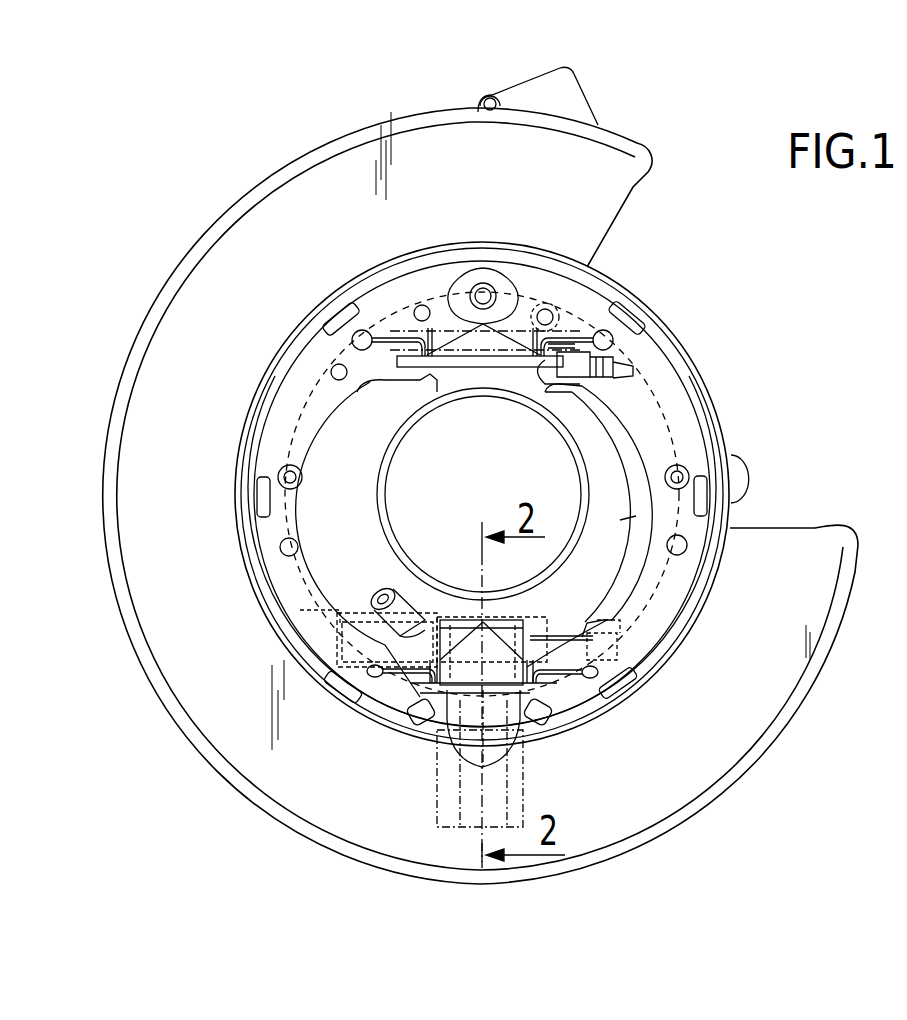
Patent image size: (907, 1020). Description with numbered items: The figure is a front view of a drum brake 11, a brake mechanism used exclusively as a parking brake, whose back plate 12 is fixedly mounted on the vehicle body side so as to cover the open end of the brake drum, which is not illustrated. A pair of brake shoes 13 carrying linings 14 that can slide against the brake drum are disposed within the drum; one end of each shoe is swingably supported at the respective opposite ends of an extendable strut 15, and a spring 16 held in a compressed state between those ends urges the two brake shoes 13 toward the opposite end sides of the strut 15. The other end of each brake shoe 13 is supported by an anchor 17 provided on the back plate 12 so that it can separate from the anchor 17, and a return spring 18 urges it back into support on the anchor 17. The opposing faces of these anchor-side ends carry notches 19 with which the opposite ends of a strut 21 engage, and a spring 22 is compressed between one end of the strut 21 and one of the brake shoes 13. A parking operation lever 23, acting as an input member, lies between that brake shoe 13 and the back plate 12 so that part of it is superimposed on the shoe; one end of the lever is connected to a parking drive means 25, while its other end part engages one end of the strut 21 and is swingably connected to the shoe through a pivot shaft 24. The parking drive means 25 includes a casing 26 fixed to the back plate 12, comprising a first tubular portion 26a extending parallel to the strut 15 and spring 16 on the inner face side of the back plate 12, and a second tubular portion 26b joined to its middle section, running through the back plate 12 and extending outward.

The drum brake 11 is at (275, 652).
The back plate 12 is at (416, 250).
The brake shoes 13 is at (302, 452).
The linings 14 is at (283, 372).
The extendable strut 15 is at (520, 698).
The spring 16 is at (573, 683).
The anchor 17 is at (483, 268).
The return spring 18 is at (574, 346).
The notches 19 is at (433, 376).
The strut 21 is at (468, 368).
The spring 22 is at (567, 380).
The parking operation lever 23 is at (632, 517).
The pivot shaft 24 is at (546, 308).
The parking drive means 25 is at (437, 612).
The casing 26 is at (412, 718).
The first tubular portion 26a is at (423, 662).
The second tubular portion 26b is at (437, 795).